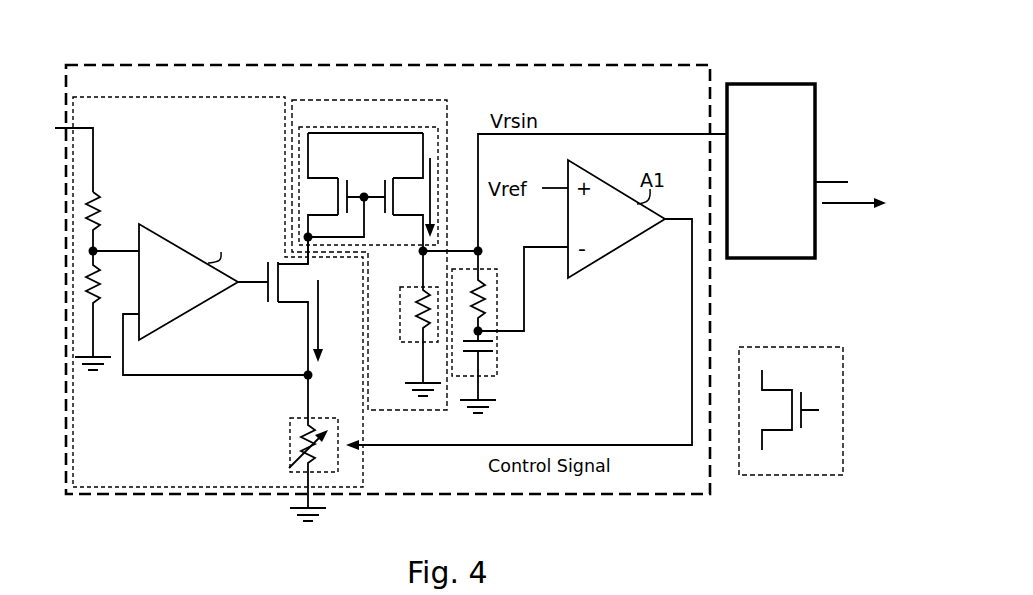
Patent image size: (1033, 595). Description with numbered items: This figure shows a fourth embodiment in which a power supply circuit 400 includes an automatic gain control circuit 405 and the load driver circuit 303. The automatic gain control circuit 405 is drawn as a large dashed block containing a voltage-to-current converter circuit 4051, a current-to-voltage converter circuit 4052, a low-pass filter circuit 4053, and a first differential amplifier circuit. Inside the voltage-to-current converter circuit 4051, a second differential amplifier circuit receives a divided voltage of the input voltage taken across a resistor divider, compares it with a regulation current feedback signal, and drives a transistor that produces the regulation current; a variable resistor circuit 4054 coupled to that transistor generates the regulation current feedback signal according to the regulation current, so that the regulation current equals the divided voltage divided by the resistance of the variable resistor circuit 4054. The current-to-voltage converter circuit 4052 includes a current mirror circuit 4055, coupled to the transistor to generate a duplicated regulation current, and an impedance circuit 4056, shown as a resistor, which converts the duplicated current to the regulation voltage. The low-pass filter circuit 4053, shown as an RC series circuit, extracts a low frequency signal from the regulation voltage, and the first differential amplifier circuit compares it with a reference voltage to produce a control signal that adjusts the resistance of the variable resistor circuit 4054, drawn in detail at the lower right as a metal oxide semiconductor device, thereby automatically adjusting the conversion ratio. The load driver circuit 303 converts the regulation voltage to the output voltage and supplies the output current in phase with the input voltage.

The power supply circuit 400 is at (834, 40).
The automatic gain control circuit 405 is at (388, 279).
The voltage-to-current converter circuit 4051 is at (188, 292).
The current-to-voltage converter circuit 4052 is at (369, 254).
The low-pass filter circuit 4053 is at (497, 372).
The variable resistor circuit 4054 is at (290, 438).
The current mirror circuit 4055 is at (356, 127).
The impedance circuit 4056 is at (400, 317).
The load driver circuit 303 is at (760, 259).